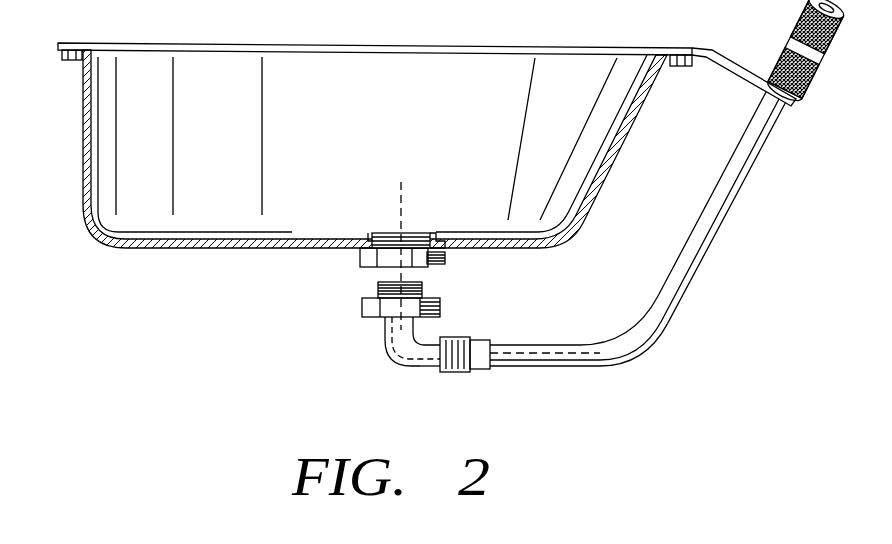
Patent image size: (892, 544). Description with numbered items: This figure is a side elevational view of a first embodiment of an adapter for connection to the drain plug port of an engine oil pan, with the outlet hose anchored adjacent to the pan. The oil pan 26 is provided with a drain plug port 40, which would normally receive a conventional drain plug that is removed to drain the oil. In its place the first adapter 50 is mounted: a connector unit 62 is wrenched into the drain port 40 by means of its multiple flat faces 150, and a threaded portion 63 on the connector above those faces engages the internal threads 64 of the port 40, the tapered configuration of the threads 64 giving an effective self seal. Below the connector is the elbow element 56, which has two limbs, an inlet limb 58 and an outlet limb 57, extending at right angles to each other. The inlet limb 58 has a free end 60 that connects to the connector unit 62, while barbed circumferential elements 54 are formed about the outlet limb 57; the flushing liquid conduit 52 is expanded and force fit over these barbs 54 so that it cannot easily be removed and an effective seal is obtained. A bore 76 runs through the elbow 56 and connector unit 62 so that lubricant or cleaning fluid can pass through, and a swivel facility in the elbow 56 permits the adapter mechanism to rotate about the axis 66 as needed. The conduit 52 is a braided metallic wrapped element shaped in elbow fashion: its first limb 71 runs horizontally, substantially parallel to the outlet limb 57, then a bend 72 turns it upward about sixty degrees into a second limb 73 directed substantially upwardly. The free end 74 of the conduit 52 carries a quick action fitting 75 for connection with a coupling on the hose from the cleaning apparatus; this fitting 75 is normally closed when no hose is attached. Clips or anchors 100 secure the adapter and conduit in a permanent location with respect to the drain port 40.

The oil pan 26 is at (641, 104).
The drain plug port 40 is at (400, 232).
The first adapter 50 is at (409, 349).
The flushing liquid conduit 52 is at (654, 254).
The barbed circumferential elements 54 is at (462, 373).
The elbow element 56 is at (374, 354).
The outlet limb 57 is at (430, 370).
The inlet limb 58 is at (385, 320).
The free end 60 is at (353, 306).
The connector unit 62 is at (343, 264).
The threaded portion 63 is at (372, 240).
The internal threads 64 is at (418, 233).
The axis 66 is at (401, 182).
The first limb 71 is at (570, 369).
The bend 72 is at (648, 336).
The second limb 73 is at (713, 193).
The free end 74 is at (781, 112).
The quick action fitting 75 is at (789, 40).
The bore 76 is at (393, 365).
The clips or anchors 100 is at (727, 57).
The flat faces 150 is at (338, 237).